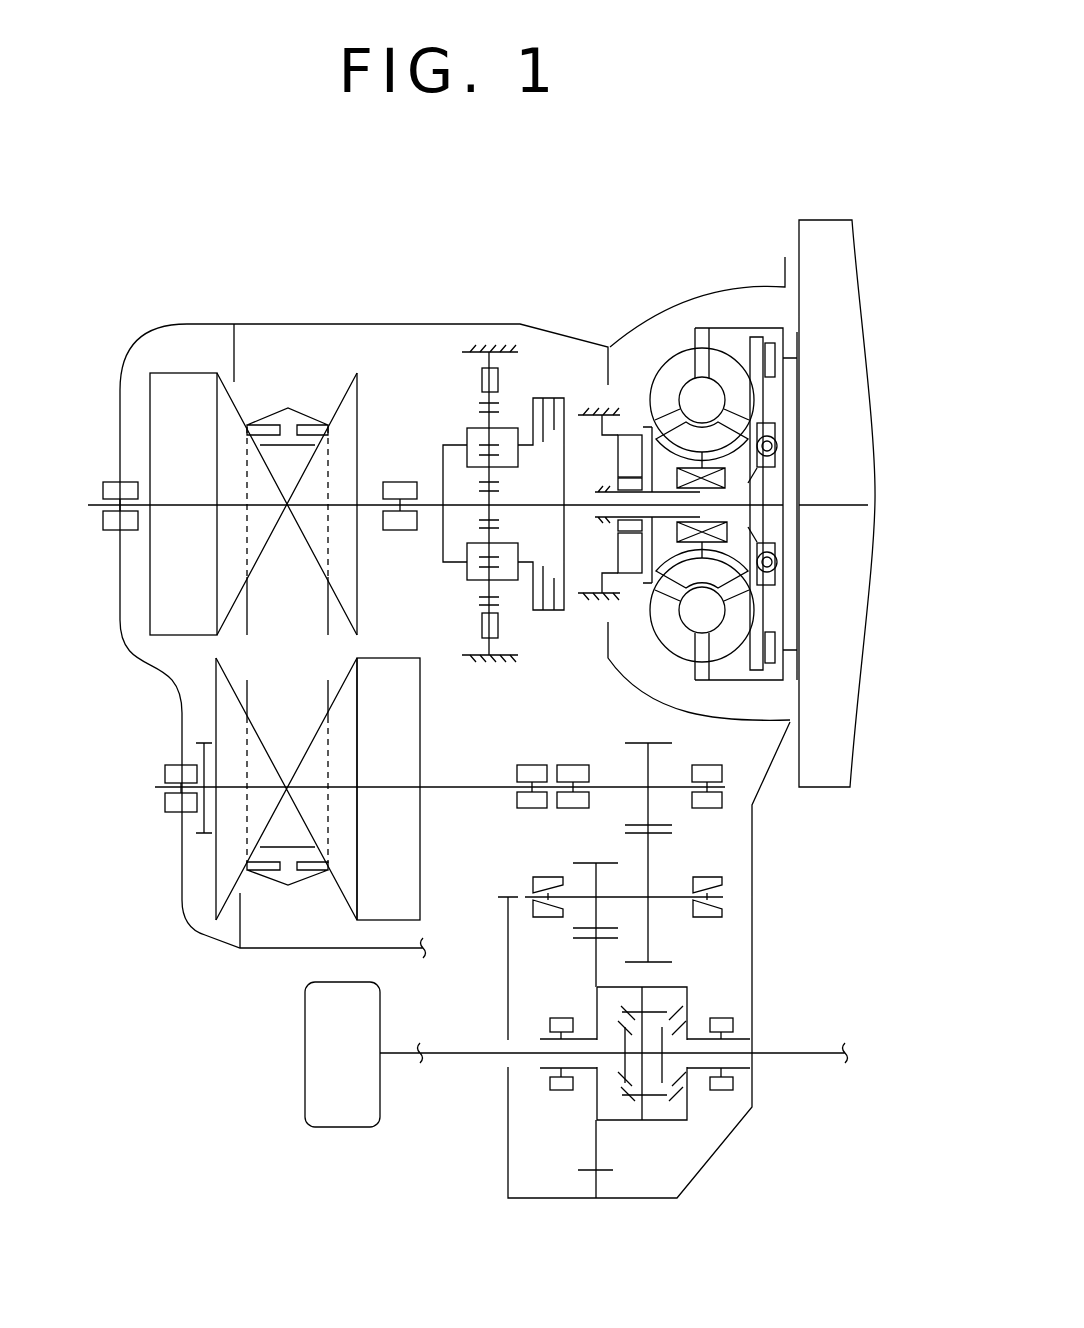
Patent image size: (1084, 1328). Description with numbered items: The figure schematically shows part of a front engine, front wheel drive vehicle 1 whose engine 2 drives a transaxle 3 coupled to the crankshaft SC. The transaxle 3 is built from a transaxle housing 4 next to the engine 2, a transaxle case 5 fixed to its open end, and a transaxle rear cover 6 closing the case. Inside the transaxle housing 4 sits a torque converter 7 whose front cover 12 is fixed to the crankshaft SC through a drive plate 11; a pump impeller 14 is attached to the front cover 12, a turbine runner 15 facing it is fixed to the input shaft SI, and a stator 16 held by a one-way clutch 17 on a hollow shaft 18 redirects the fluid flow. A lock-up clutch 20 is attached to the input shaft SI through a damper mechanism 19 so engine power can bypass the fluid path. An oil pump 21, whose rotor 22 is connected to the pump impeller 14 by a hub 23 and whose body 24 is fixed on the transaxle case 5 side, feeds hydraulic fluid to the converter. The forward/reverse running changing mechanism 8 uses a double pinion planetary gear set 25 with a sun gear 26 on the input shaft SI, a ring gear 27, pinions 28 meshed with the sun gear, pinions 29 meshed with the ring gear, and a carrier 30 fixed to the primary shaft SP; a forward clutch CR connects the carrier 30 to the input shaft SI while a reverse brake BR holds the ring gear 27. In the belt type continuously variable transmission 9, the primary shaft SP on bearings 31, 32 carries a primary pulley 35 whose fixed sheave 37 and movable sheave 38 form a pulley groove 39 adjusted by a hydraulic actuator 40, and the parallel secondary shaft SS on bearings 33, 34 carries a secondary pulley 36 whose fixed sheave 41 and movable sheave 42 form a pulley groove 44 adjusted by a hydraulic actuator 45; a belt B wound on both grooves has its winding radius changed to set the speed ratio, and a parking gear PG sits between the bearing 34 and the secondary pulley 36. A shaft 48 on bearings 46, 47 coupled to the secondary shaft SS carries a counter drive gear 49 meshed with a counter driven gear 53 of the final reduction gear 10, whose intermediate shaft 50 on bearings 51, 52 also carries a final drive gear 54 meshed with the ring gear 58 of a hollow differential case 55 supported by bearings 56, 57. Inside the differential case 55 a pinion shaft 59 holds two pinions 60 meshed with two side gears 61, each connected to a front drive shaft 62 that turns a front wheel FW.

The vehicle 1 is at (368, 271).
The engine 2 is at (825, 218).
The transaxle 3 is at (259, 307).
The transaxle housing 4 is at (714, 279).
The transaxle case 5 is at (462, 311).
The transaxle rear cover 6 is at (136, 338).
The torque converter 7 is at (682, 334).
The forward/reverse running changing mechanism 8 is at (524, 390).
The belt type continuously variable transmission 9 is at (281, 389).
The final reduction gear 10 is at (579, 1140).
The drive plate 11 is at (797, 618).
The front cover 12 is at (785, 332).
The pump impeller 14 is at (665, 647).
The turbine runner 15 is at (720, 637).
The stator 16 is at (697, 567).
The one-way clutch 17 is at (727, 523).
The hollow shaft 18 is at (613, 517).
The damper mechanism 19 is at (780, 413).
The lock-up clutch 20 is at (772, 663).
The oil pump 21 is at (638, 420).
The rotor 22 is at (652, 522).
The hub 23 is at (660, 468).
The body 24 is at (613, 597).
The planetary gear set 25 is at (459, 391).
The sun gear 26 is at (500, 518).
The ring gear 27 is at (497, 613).
The pinions 28 is at (495, 480).
The pinions 29 is at (482, 595).
The carrier 30 is at (508, 540).
The bearing 31 is at (400, 467).
The bearing 32 is at (110, 465).
The bearing 33 is at (516, 822).
The bearing 34 is at (154, 766).
The primary pulley 35 is at (294, 550).
The secondary pulley 36 is at (276, 712).
The fixed sheave 37 is at (348, 602).
The movable sheave 38 is at (227, 577).
The pulley groove 39 is at (281, 461).
The hydraulic actuator 40 is at (182, 395).
The fixed sheave 41 is at (217, 680).
The movable sheave 42 is at (315, 757).
The pulley groove 44 is at (298, 838).
The hydraulic actuator 45 is at (403, 920).
The bearing 46 is at (557, 747).
The bearing 47 is at (738, 766).
The shaft 48 is at (602, 783).
The counter drive gear 49 is at (633, 743).
The intermediate shaft 50 is at (673, 903).
The bearing 51 is at (545, 920).
The bearing 52 is at (722, 912).
The counter driven gear 53 is at (657, 833).
The final drive gear 54 is at (587, 862).
The differential case 55 is at (663, 1131).
The bearing 56 is at (557, 1088).
The bearing 57 is at (720, 1013).
The ring gear 58 is at (610, 940).
The pinion shaft 59 is at (640, 1107).
The pinions 60 is at (622, 1012).
The side gears 61 is at (662, 1013).
The front drive shaft 62 is at (458, 1057).
The belt B is at (292, 423).
The forward clutch CR is at (557, 395).
The primary shaft SP is at (443, 500).
The input shaft SI is at (587, 500).
The crankshaft SC is at (830, 500).
The reverse brake BR is at (482, 622).
The secondary shaft SS is at (457, 783).
The parking gear PG is at (200, 820).
The front wheel FW is at (316, 1060).